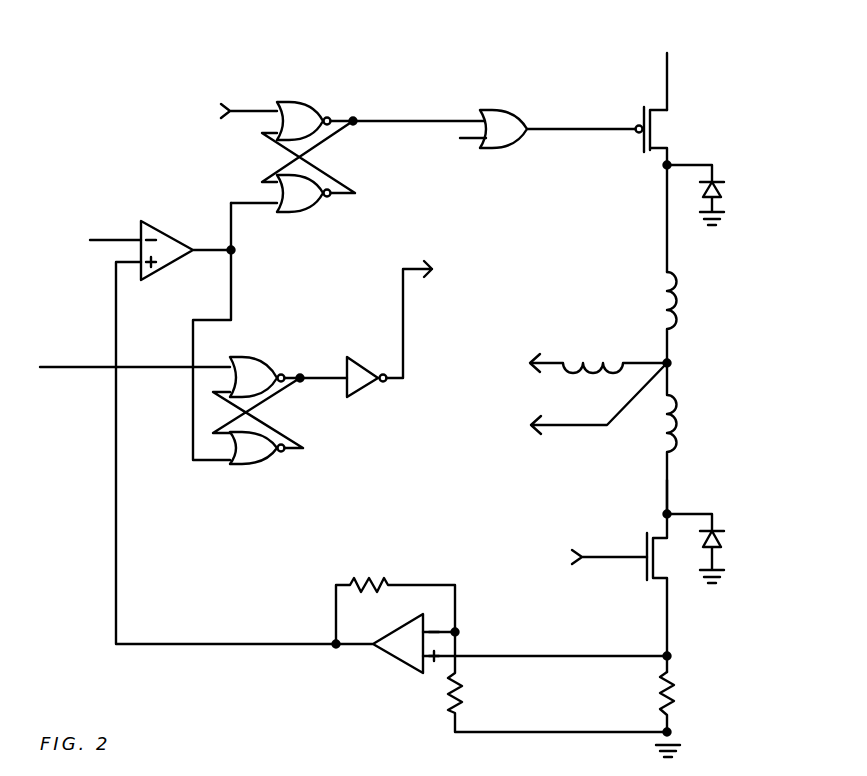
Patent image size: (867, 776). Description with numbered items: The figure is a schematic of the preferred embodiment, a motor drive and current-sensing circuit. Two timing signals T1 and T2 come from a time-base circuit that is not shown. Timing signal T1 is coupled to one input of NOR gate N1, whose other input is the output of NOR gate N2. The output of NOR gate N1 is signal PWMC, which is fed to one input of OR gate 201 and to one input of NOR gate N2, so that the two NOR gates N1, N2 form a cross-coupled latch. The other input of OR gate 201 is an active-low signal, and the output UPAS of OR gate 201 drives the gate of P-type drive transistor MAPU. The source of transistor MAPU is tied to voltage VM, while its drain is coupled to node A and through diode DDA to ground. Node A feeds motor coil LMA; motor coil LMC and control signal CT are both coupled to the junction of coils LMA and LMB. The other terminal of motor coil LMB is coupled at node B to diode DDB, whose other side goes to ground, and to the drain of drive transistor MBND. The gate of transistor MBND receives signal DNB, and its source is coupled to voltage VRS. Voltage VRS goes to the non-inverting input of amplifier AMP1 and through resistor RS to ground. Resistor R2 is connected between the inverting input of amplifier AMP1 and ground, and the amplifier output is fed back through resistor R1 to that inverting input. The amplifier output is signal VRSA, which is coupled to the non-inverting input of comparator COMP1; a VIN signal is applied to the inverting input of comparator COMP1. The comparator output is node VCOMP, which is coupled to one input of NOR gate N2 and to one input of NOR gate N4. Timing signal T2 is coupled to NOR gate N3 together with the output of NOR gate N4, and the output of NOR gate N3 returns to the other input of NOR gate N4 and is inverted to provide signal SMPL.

The timing signal T1 is at (232, 111).
The NOR gate N1 is at (309, 136).
The NOR gate N2 is at (281, 211).
The PWMC signal PWMC is at (358, 119).
The OR gate 201 is at (507, 150).
The UPAS signal UPAS is at (558, 128).
The voltage VM is at (661, 69).
The P-type drive transistor MAPU is at (653, 130).
The diode DDA is at (722, 191).
The node A is at (667, 244).
The motor coil LMA is at (678, 334).
The motor coil LMC is at (588, 352).
The node C is at (521, 365).
The control signal CT is at (583, 399).
The motor coil LMB is at (683, 437).
The node B is at (687, 494).
The diode DDB is at (723, 541).
The DNB signal DNB is at (581, 558).
The drive transistor MBND is at (647, 572).
The voltage VRS is at (669, 638).
The resistor RS is at (673, 693).
The resistor R2 is at (462, 708).
The resistor R1 is at (397, 597).
The amplifier AMP1 is at (392, 656).
The VRSA signal VRSA is at (201, 643).
The comparator COMP1 is at (181, 233).
The VIN signal VIN is at (94, 241).
The node VCOMP is at (234, 256).
The timing signal T2 is at (123, 372).
The NOR gate N3 is at (280, 391).
The NOR gate N4 is at (257, 466).
The SMPL signal SMPL is at (420, 329).